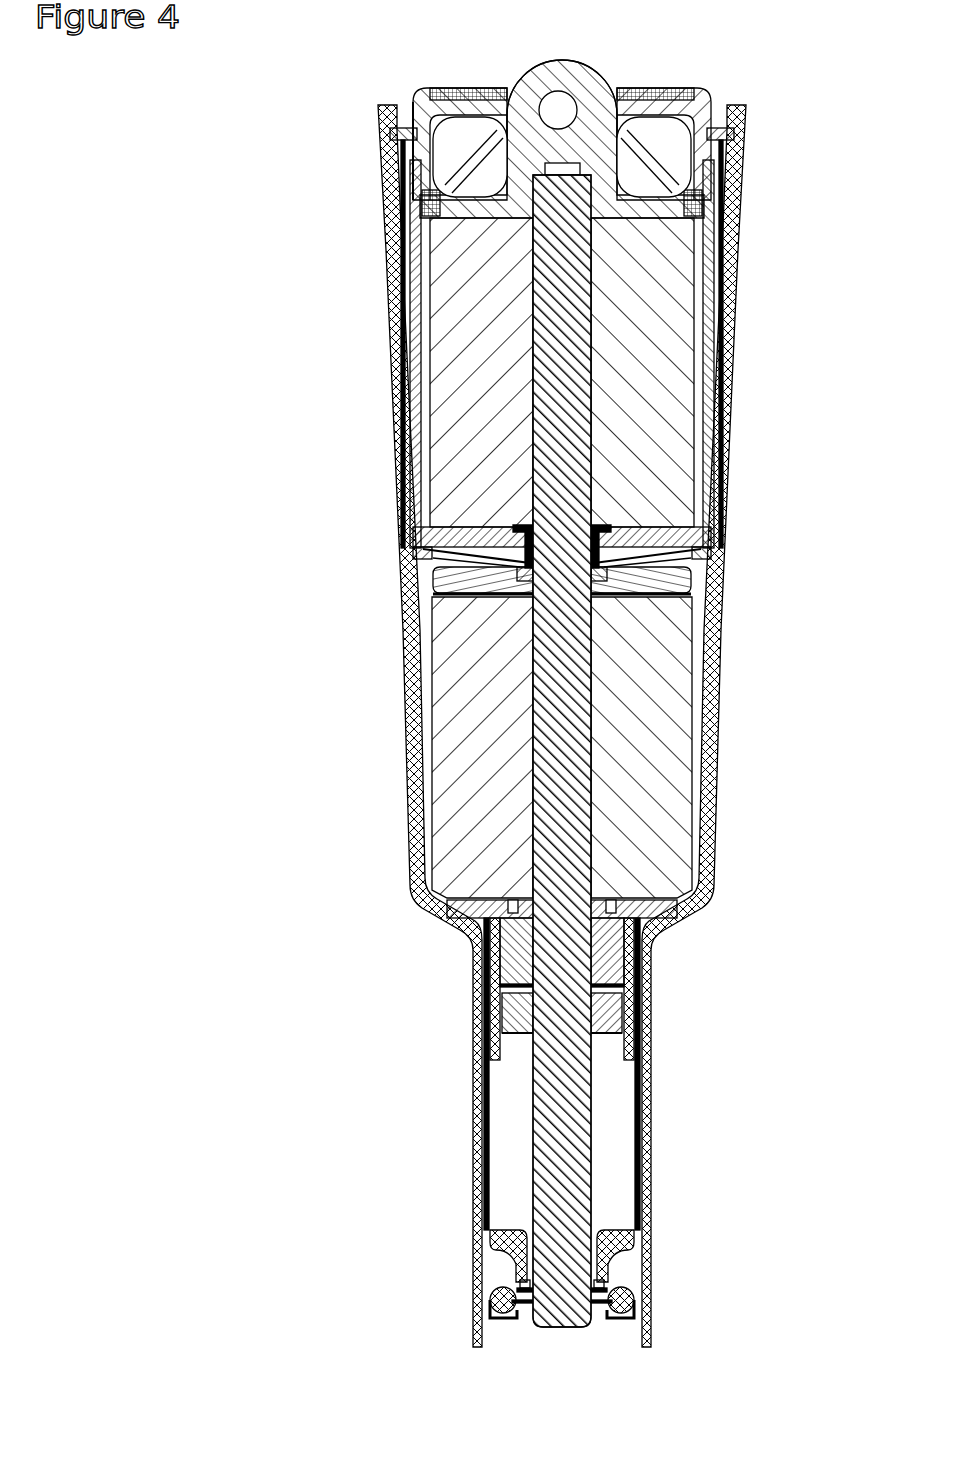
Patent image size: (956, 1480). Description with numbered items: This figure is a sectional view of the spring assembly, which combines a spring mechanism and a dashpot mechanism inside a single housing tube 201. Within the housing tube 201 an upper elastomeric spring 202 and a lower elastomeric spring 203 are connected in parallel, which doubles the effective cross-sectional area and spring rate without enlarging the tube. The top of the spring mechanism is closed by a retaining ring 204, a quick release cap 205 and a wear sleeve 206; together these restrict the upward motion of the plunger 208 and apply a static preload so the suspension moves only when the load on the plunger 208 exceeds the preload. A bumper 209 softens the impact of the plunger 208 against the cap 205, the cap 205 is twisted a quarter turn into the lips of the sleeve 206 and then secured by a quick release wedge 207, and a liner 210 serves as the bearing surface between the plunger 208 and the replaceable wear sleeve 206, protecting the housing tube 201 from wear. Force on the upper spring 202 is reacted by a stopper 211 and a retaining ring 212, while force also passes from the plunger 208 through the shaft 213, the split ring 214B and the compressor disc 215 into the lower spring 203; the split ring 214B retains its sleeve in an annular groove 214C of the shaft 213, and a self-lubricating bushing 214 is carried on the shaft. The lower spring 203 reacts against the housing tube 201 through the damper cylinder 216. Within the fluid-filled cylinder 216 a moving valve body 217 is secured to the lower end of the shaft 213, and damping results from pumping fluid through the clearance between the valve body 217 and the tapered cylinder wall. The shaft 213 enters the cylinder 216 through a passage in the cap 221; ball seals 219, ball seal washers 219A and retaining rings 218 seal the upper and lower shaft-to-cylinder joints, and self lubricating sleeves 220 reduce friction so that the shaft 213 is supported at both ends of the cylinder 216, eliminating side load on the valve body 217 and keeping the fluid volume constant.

The housing tube 201 is at (475, 1158).
The upper elastomeric spring 202 is at (490, 395).
The lower elastomeric spring 203 is at (463, 833).
The retaining ring 204 is at (484, 125).
The quick release cap 205 is at (324, 139).
The wear sleeve 206 is at (469, 199).
The quick release wedge 207 is at (475, 133).
The plunger 208 is at (425, 85).
The bumper 209 is at (467, 157).
The liner 210 is at (480, 344).
The stopper 211 is at (474, 530).
The retaining ring 212 is at (464, 563).
The shaft 213 is at (550, 733).
The self-lubricating bushing 214 is at (424, 513).
The split ring 214B is at (422, 584).
The annular groove 214C is at (464, 648).
The compressor disc 215 is at (470, 605).
The damper cylinder 216 is at (493, 1223).
The valve body 217 is at (429, 1059).
The retaining ring 218 is at (435, 1166).
The ball seal 219 is at (497, 957).
The ball seal washer 219A is at (497, 980).
The self lubricating sleeve 220 is at (490, 918).
The cap 221 is at (457, 890).